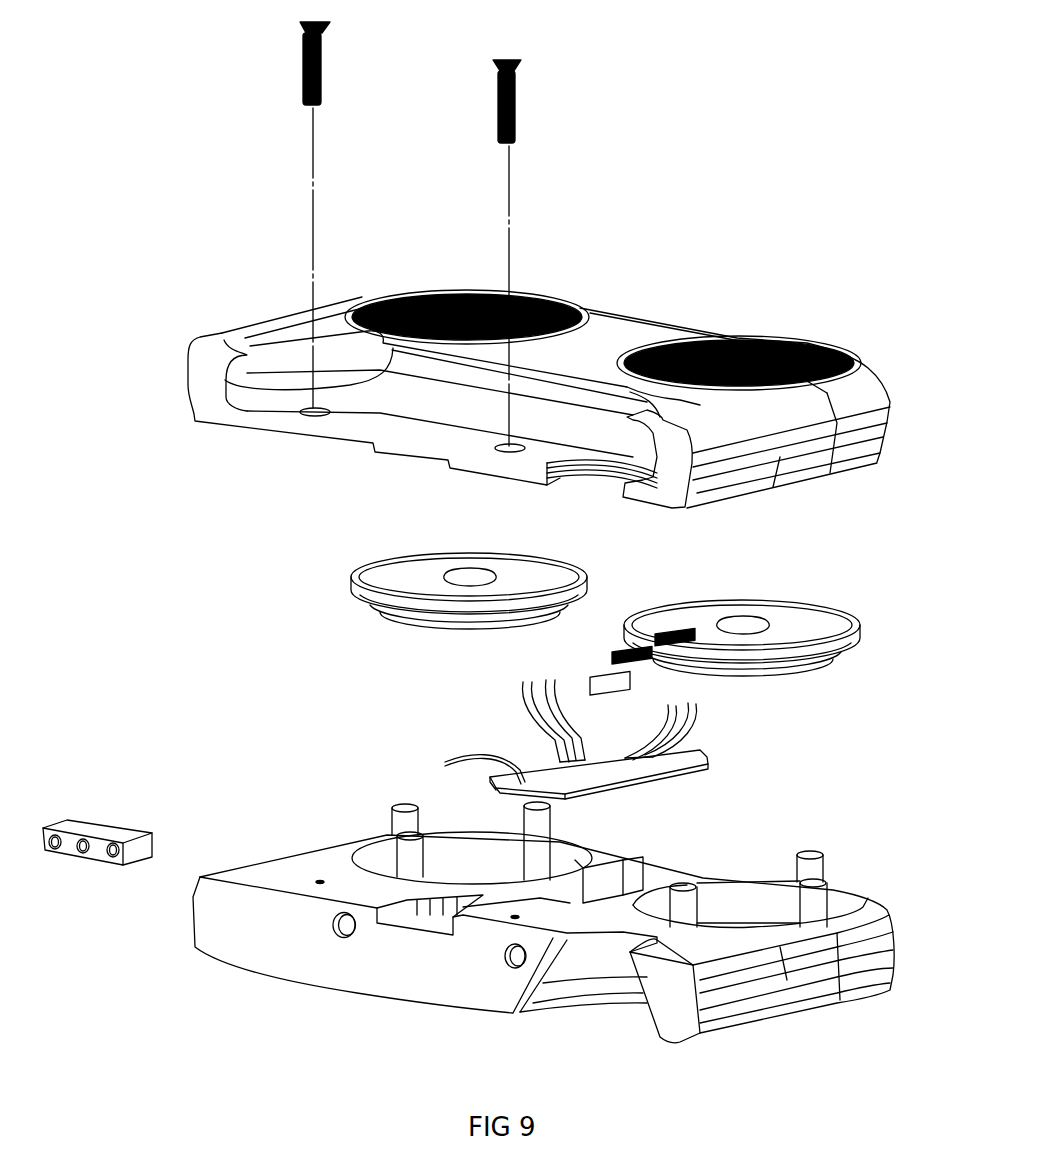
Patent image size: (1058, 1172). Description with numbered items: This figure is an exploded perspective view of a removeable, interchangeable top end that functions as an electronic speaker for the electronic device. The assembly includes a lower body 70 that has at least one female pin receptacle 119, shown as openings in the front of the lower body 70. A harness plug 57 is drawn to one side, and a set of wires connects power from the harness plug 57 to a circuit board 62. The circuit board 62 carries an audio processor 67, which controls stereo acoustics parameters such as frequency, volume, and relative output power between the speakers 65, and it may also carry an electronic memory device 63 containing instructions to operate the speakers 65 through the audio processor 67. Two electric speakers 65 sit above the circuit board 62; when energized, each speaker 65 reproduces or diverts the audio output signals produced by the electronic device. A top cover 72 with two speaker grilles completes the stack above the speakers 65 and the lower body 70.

The top cover 72 is at (892, 398).
The electric speaker 65 is at (365, 560).
The audio processor 67 is at (625, 743).
The circuit board 62 is at (649, 723).
The electronic memory device 63 is at (610, 783).
The harness plug 57 is at (102, 823).
The lower body 70 is at (565, 930).
The female pin receptacle 119 is at (333, 933).